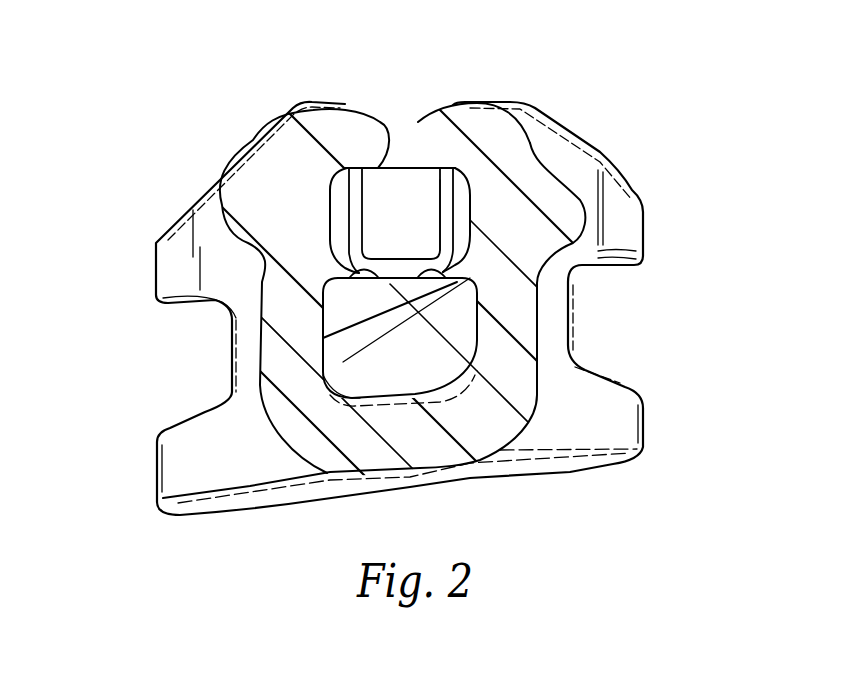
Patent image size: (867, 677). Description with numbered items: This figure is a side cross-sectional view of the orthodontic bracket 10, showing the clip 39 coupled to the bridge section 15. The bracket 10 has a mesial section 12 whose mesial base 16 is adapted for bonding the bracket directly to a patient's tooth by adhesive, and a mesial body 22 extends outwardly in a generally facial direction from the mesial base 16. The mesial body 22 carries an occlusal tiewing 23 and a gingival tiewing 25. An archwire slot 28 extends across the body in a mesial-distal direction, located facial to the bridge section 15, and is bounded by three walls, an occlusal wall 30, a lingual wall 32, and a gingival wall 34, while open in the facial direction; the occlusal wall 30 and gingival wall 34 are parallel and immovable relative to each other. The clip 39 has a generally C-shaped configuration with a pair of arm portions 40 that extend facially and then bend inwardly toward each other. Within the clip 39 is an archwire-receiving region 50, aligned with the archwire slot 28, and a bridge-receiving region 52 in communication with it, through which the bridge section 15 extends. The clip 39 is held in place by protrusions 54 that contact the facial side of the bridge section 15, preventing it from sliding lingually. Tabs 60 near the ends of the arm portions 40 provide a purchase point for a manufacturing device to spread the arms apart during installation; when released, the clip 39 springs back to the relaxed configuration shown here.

The bracket 10 is at (617, 62).
The mesial section 12 is at (578, 304).
The bridge section 15 is at (356, 372).
The mesial base 16 is at (650, 428).
The mesial body 22 is at (573, 326).
The occlusal tiewing 23 is at (155, 271).
The gingival tiewing 25 is at (641, 212).
The archwire slot 28 is at (377, 118).
The occlusal wall 30 is at (378, 181).
The lingual wall 32 is at (403, 262).
The gingival wall 34 is at (437, 200).
The clip 39 is at (495, 150).
The arm portions 40 is at (343, 112).
The archwire-receiving region 50 is at (347, 165).
The bridge-receiving region 52 is at (325, 338).
The protrusions 54 is at (383, 278).
The tabs 60 is at (240, 213).